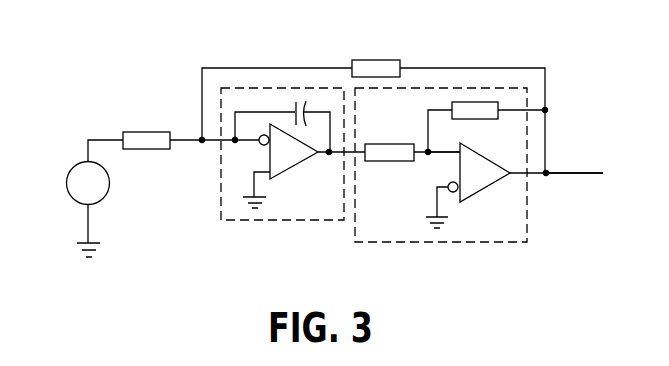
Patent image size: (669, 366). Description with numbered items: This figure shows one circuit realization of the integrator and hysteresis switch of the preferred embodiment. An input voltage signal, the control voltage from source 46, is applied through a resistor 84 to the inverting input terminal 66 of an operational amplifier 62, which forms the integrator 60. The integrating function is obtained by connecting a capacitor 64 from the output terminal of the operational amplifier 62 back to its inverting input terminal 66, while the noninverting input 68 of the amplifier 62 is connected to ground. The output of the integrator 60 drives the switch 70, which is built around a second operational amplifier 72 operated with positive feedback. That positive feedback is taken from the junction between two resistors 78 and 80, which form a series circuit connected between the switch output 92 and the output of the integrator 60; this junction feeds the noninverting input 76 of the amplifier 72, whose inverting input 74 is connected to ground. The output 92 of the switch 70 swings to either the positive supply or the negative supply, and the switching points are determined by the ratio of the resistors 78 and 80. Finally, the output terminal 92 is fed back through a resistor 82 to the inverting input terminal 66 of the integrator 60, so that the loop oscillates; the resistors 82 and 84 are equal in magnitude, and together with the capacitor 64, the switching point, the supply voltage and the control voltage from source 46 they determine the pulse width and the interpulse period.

The source 46 is at (66, 188).
The resistor 84 is at (148, 130).
The resistor 82 is at (385, 58).
The integrator 60 is at (219, 189).
The capacitor 64 is at (294, 101).
The inverting input terminal 66 is at (258, 142).
The operational amplifier 62 is at (307, 163).
The noninverting input 68 is at (267, 185).
The switch 70 is at (352, 242).
The resistor 80 is at (394, 145).
The resistor 78 is at (479, 120).
The non-inverting input 76 is at (450, 150).
The operational amplifier 72 is at (494, 186).
The inverting input 74 is at (435, 192).
The output terminal 92 is at (551, 166).